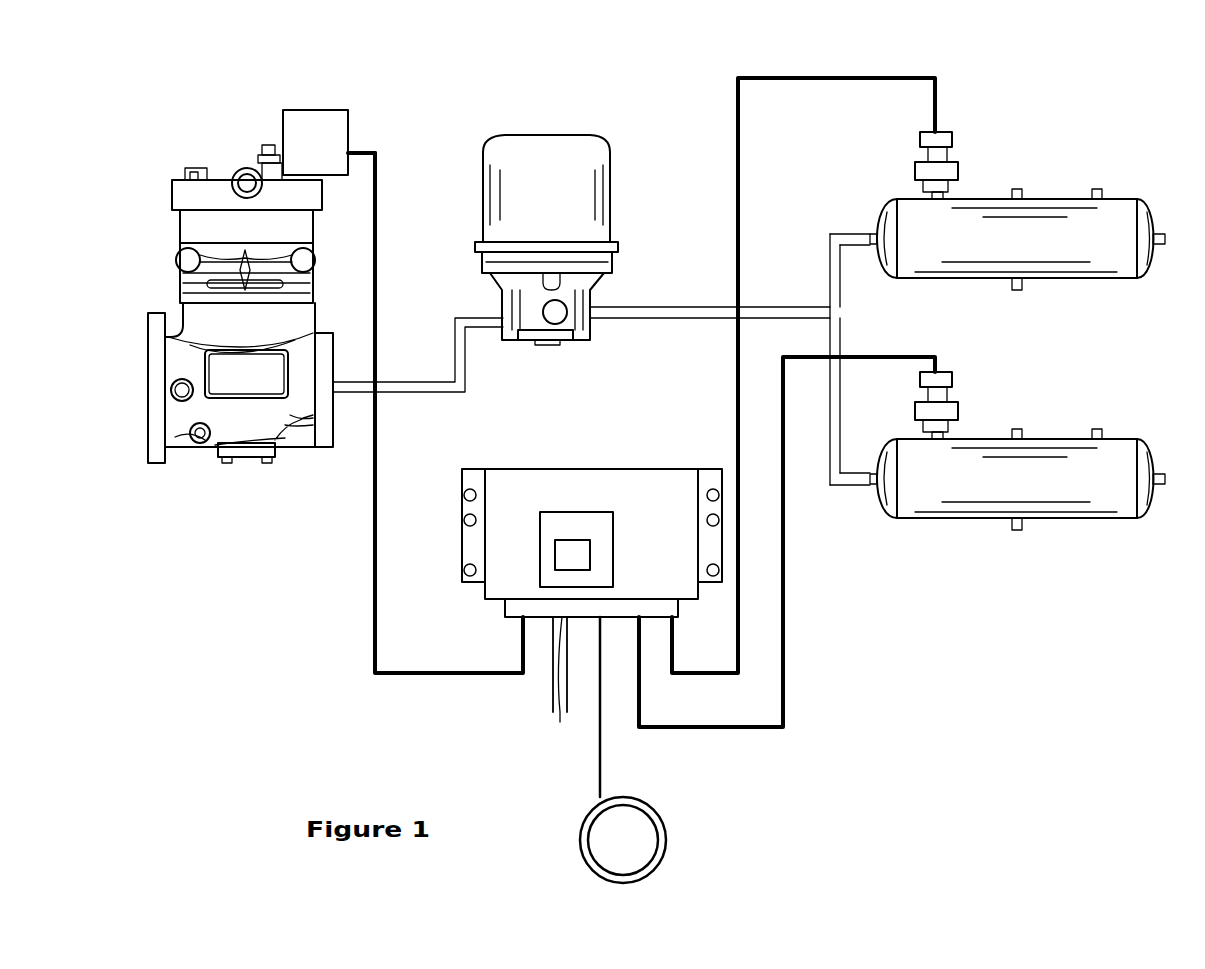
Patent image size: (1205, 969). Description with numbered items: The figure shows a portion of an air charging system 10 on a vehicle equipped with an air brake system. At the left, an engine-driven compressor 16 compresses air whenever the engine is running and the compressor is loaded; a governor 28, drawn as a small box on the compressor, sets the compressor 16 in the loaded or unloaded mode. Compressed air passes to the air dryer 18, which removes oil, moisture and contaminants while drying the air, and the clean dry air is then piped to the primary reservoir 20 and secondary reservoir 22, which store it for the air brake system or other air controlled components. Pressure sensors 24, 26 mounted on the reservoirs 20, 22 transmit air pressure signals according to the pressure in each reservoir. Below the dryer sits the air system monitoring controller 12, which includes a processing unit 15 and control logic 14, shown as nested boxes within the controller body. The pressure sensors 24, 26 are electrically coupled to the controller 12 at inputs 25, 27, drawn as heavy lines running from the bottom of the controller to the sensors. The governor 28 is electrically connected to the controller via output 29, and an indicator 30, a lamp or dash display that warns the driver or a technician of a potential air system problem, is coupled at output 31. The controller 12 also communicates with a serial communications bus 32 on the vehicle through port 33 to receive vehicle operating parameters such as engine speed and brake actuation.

The air charging system 10 is at (661, 98).
The air system monitoring controller 12 is at (592, 469).
The control logic 14 is at (590, 543).
The processing unit 15 is at (577, 512).
The compressor 16 is at (322, 337).
The air dryer 18 is at (563, 133).
The primary reservoir 20 is at (1000, 212).
The secondary reservoir 22 is at (1040, 452).
The pressure sensor 24 is at (952, 131).
The input 25 is at (673, 620).
The pressure sensor 26 is at (952, 400).
The input 27 is at (645, 620).
The governor 28 is at (350, 108).
The output 29 is at (518, 620).
The indicator 30 is at (660, 818).
The output 31 is at (604, 620).
The serial communications bus 32 is at (546, 684).
The port 33 is at (558, 723).